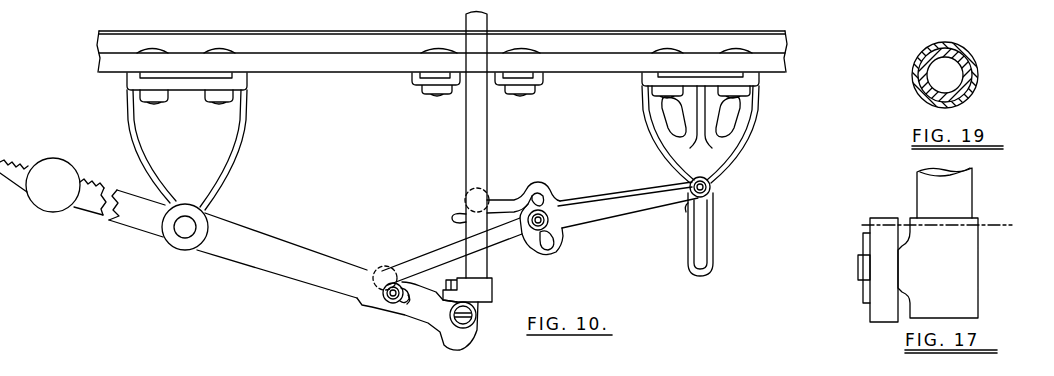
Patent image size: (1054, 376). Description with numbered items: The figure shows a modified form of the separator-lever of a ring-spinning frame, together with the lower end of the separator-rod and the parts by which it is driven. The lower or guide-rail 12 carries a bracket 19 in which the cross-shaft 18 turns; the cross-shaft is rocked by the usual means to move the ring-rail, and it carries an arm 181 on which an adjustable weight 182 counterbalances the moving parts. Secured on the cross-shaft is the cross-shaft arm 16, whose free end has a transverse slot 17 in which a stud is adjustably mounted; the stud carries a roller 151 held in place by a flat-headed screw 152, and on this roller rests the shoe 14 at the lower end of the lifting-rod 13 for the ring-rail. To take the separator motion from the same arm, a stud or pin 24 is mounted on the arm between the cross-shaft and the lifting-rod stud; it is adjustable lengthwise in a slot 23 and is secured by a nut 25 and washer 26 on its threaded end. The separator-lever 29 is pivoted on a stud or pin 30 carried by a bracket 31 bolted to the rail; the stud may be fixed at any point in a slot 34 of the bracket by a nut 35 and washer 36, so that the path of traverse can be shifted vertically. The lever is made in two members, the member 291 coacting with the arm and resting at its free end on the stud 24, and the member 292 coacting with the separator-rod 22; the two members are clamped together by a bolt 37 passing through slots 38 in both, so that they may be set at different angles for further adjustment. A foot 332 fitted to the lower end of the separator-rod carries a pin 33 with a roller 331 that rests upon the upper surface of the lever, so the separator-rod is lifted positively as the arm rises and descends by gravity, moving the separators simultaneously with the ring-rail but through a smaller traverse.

In FIG. 10, the lower or guide-rail 12 is at (442, 51).
In FIG. 10, the lifting-rod 13 is at (476, 145).
In FIG. 10, the shoe 14 is at (467, 290).
In FIG. 10, the roller 151 is at (475, 308).
In FIG. 10, the flat-headed screw 152 is at (480, 318).
In FIG. 10, the cross-shaft arm 16 is at (282, 255).
In FIG. 10, the transverse slot 17 is at (462, 324).
In FIG. 10, the cross-shaft 18 is at (185, 227).
In FIG. 10, the arm 181 is at (137, 213).
In FIG. 10, the weight 182 is at (53, 186).
In FIG. 10, the bracket 19 is at (187, 141).
In FIG. 17, the bracket 19 is at (938, 226).
In FIG. 19, the separator-rod 22 is at (962, 54).
In FIG. 17, the separator-rod 22 is at (944, 193).
In FIG. 10, the slot 23 is at (382, 290).
In FIG. 10, the stud or pin 24 is at (387, 300).
In FIG. 10, the nut 25 is at (393, 302).
In FIG. 10, the washer 26 is at (407, 309).
In FIG. 10, the separator-lever 29 is at (665, 156).
In FIG. 10, the member 291 is at (408, 272).
In FIG. 10, the member 292 is at (447, 213).
In FIG. 10, the stud or pin 30 is at (712, 200).
In FIG. 10, the bracket 31 is at (700, 128).
In FIG. 17, the pin 33 is at (852, 271).
In FIG. 17, the roller 331 is at (888, 211).
In FIG. 19, the foot 332 is at (986, 74).
In FIG. 17, the foot 332 is at (938, 268).
In FIG. 10, the slot 34 is at (712, 251).
In FIG. 10, the nut 35 is at (686, 214).
In FIG. 10, the washer 36 is at (711, 185).
In FIG. 10, the bolt 37 is at (548, 216).
In FIG. 10, the slots 38 is at (548, 190).